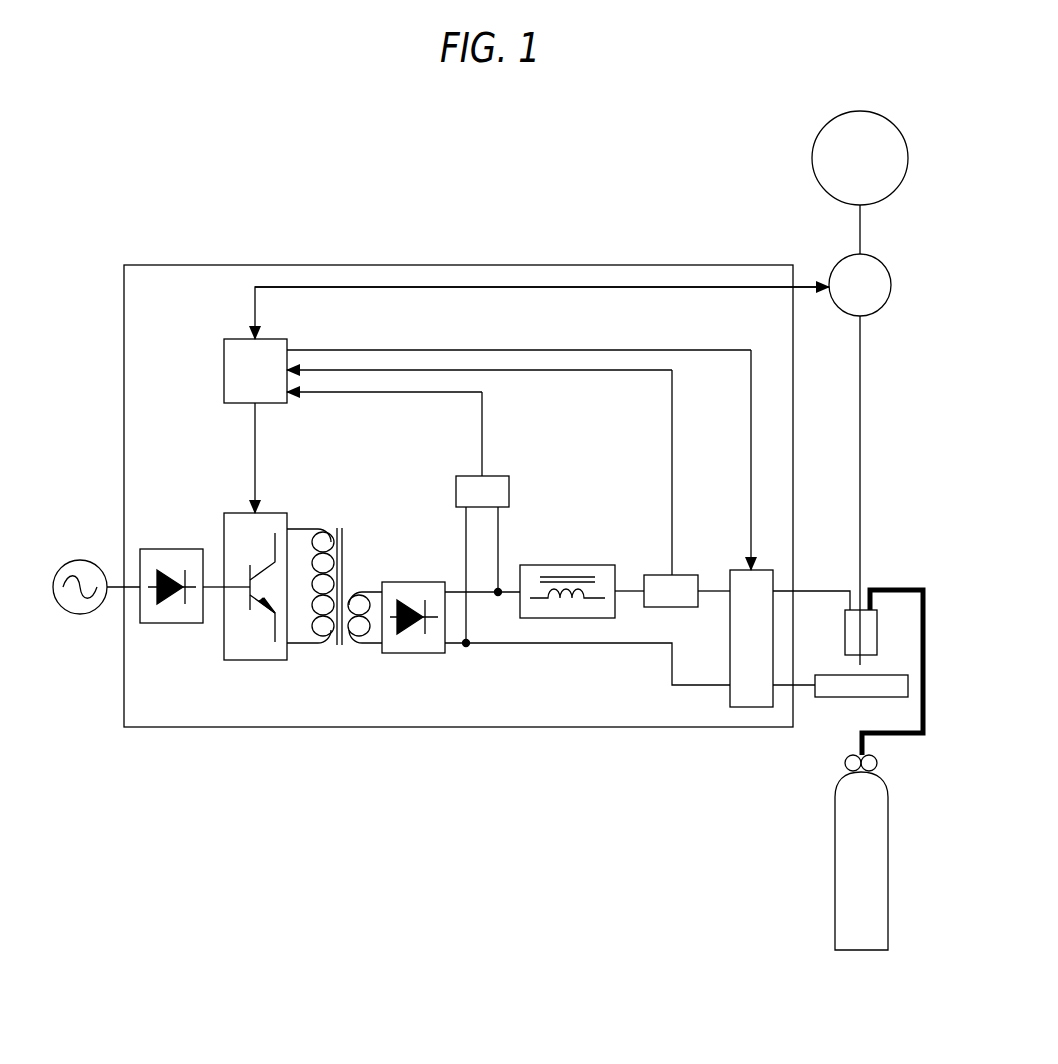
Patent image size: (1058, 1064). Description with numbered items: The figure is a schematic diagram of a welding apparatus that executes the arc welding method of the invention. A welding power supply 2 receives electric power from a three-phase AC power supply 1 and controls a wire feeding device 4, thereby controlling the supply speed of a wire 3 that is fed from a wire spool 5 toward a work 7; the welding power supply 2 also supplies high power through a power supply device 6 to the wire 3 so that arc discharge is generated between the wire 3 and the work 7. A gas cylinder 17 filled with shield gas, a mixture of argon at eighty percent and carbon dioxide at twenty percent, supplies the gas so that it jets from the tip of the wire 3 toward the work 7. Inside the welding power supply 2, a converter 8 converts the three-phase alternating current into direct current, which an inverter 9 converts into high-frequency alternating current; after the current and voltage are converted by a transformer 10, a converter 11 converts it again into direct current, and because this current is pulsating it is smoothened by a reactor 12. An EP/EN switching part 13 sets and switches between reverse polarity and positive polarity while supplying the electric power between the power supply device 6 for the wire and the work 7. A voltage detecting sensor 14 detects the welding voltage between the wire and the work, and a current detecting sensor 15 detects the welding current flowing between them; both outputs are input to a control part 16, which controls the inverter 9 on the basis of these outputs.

The three-phase AC power supply 1 is at (87, 561).
The welding power supply 2 is at (196, 265).
The wire 3 is at (862, 442).
The wire feeding device 4 is at (889, 268).
The wire spool 5 is at (893, 122).
The power supply device 6 is at (845, 644).
The work 7 is at (828, 697).
The converter 8 is at (156, 549).
The inverter 9 is at (283, 512).
The transformer 10 is at (338, 527).
The converter 11 is at (402, 582).
The reactor 12 is at (592, 565).
The EP/EN switching part 13 is at (764, 570).
The voltage detecting sensor 14 is at (501, 476).
The current detecting sensor 15 is at (688, 575).
The control part 16 is at (292, 338).
The gas cylinder 17 is at (835, 886).